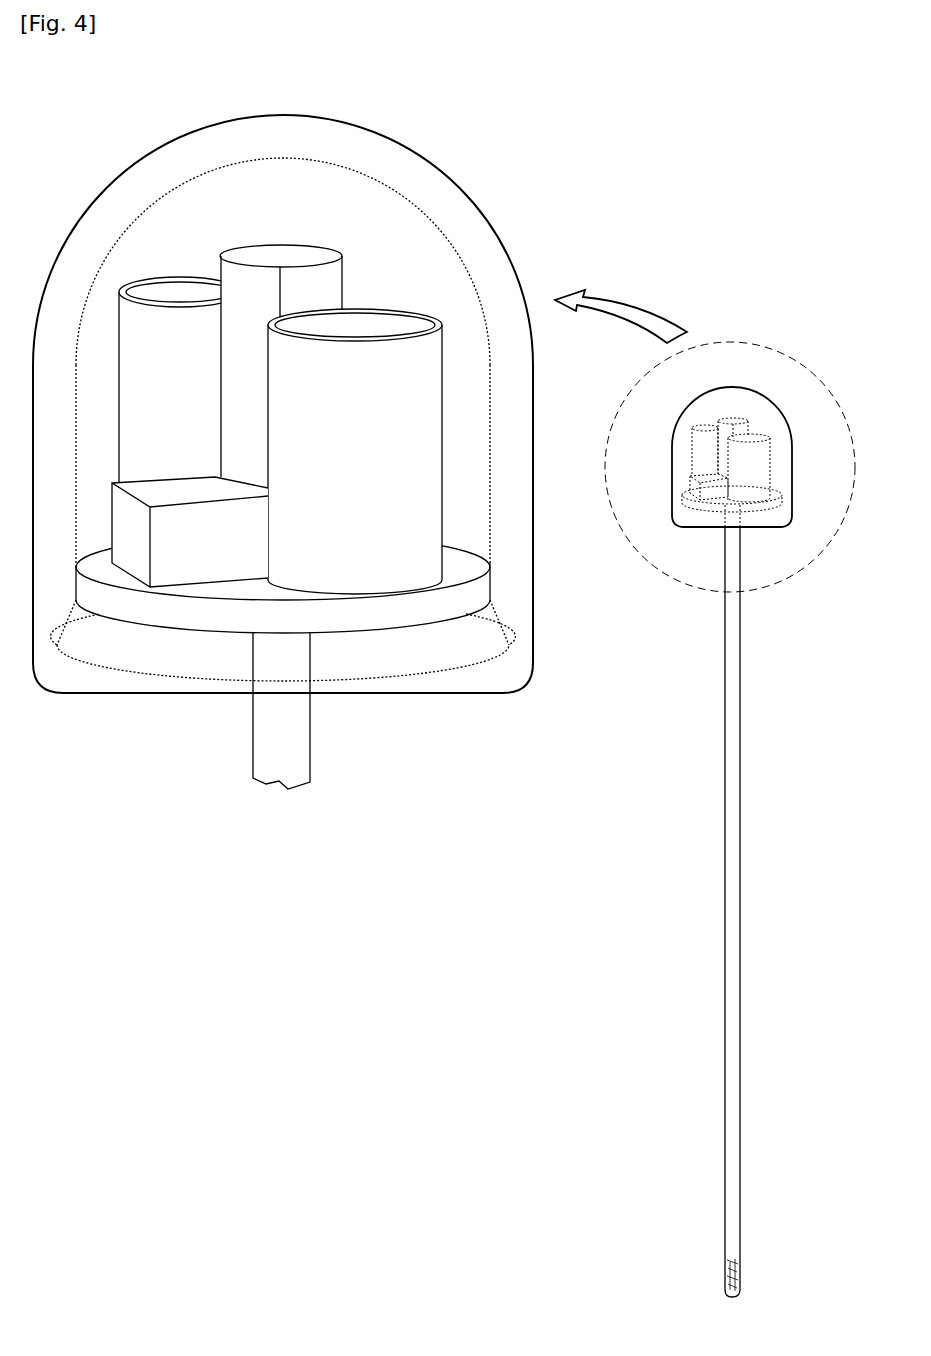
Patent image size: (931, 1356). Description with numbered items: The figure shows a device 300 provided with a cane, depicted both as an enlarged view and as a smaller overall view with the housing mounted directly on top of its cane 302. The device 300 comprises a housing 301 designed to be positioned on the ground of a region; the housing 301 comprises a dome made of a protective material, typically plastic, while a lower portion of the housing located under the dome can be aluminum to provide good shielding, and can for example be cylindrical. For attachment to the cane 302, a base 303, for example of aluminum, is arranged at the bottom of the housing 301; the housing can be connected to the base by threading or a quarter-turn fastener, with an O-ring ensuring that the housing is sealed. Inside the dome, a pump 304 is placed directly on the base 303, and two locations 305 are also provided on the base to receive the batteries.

The device 300 is at (770, 372).
The housing 301 is at (345, 140).
The cane 302 is at (278, 722).
The base 303 is at (228, 617).
The pump 304 is at (173, 493).
The locations 305 is at (172, 297).